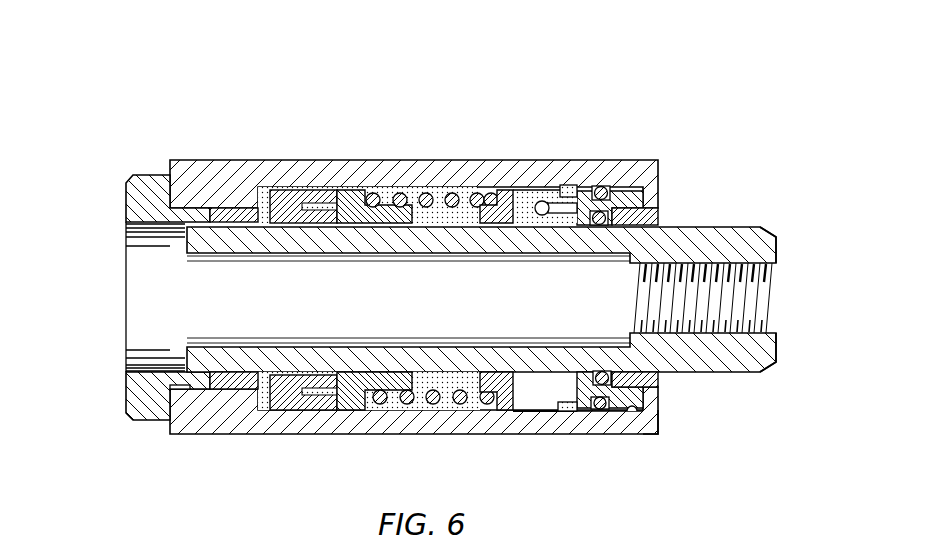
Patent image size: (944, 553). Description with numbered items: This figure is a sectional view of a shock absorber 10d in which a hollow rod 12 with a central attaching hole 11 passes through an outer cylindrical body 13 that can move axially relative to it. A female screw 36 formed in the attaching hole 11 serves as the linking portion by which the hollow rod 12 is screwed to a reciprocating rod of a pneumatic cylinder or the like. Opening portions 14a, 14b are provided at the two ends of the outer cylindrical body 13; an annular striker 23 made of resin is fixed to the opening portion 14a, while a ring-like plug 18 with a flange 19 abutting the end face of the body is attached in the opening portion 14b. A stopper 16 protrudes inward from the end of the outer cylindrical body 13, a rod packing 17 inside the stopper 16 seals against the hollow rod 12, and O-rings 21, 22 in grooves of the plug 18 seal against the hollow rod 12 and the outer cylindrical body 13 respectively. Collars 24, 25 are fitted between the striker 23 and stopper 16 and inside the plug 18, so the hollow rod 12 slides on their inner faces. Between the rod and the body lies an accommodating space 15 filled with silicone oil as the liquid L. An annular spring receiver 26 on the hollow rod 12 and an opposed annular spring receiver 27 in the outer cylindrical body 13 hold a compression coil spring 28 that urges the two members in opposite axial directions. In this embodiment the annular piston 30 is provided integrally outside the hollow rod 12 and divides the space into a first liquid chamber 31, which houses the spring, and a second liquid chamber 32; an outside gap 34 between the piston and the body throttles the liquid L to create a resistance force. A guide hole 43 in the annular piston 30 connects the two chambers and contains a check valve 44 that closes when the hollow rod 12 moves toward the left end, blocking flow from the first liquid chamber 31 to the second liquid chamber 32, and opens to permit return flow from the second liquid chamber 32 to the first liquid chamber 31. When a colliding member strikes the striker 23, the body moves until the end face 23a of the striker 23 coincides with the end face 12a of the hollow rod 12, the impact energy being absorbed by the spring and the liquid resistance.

The shock absorber 10d is at (719, 151).
The attaching hole 11 is at (606, 262).
The hollow rod 12 is at (743, 373).
The end face 12a is at (180, 352).
The outer cylindrical body 13 is at (437, 170).
The opening portion 14a is at (190, 390).
The opening portion 14b is at (633, 416).
The accommodating space 15 is at (418, 411).
The stopper 16 is at (263, 383).
The rod packing 17 is at (299, 406).
The ring-like plug 18 is at (600, 417).
The flange 19 is at (661, 432).
The O-ring 21 is at (612, 247).
The O-ring 22 is at (597, 189).
The annular striker 23 is at (149, 184).
The end face 23a is at (130, 382).
The collar 24 is at (232, 206).
The collar 25 is at (658, 216).
The annular spring receiver 26 is at (494, 198).
The annular spring receiver 27 is at (343, 195).
The compression coil spring 28 is at (388, 199).
The annular piston 30 is at (535, 376).
The first liquid chamber 31 is at (379, 406).
The second liquid chamber 32 is at (566, 414).
The outside gap 34 is at (536, 413).
The female screw 36 is at (764, 305).
The guide hole 43 is at (566, 188).
The check valve 44 is at (541, 200).
The liquid L is at (467, 409).